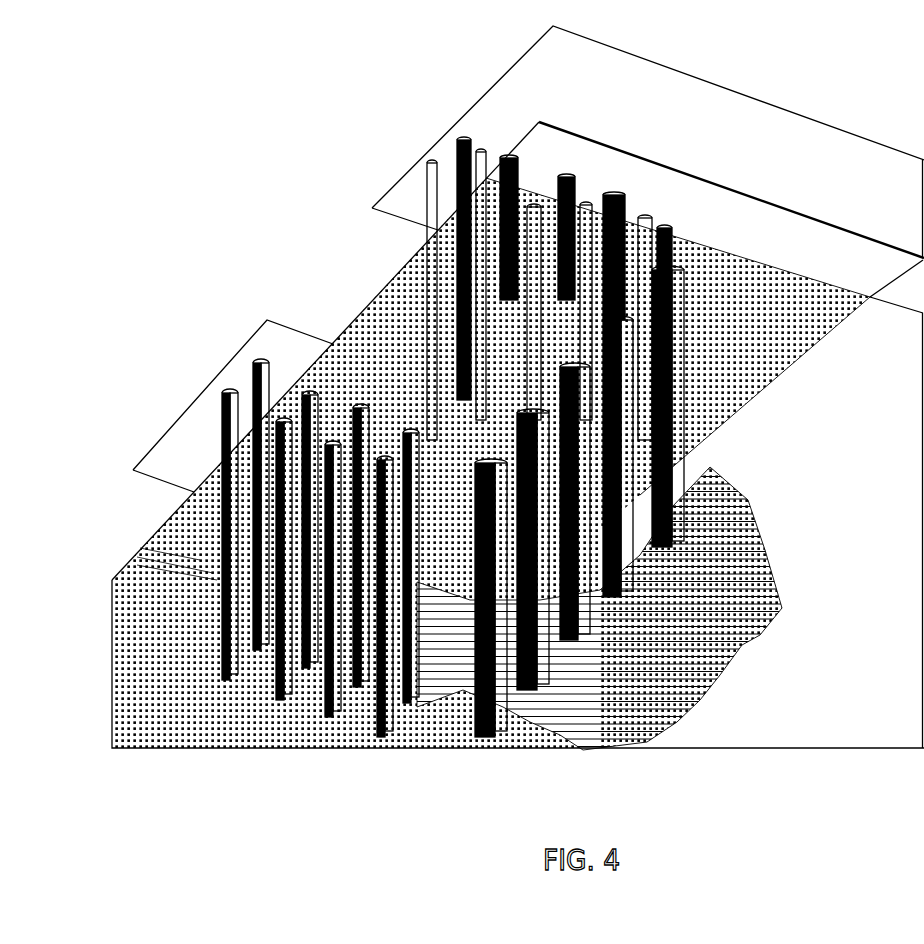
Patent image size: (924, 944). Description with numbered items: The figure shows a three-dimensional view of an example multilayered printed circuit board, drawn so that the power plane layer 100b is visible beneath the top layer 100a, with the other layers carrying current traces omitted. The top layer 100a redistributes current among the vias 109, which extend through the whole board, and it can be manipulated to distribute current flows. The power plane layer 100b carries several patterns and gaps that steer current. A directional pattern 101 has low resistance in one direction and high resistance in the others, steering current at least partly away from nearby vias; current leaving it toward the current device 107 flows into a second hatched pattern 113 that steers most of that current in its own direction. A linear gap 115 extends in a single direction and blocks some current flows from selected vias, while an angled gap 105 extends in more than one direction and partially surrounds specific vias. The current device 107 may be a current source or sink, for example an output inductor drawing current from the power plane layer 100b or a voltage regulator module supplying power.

The top layer 100a is at (246, 346).
The power plane layer 100b is at (118, 678).
The directional pattern 101 is at (764, 628).
The angled gap 105 is at (545, 355).
The current device 107 is at (455, 312).
The vias 109 is at (457, 151).
The second hatched pattern 113 is at (186, 571).
The linear gap 115 is at (385, 378).